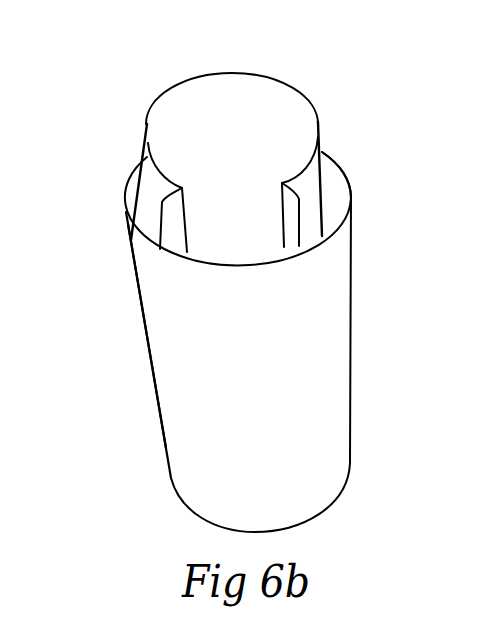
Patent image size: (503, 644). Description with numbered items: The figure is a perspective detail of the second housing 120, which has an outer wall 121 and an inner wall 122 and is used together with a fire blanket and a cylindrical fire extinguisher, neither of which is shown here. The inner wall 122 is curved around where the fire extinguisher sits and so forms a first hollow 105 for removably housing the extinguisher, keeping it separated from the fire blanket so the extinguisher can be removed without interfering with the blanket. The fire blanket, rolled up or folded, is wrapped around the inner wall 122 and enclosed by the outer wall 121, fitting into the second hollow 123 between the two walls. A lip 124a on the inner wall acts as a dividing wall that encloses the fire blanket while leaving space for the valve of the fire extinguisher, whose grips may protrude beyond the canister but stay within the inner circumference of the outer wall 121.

The first hollow 105 is at (222, 138).
The second housing 120 is at (365, 357).
The outer wall 121 is at (149, 344).
The inner wall 122 is at (148, 128).
The second hollow 123 is at (330, 186).
The lip 124a is at (170, 223).